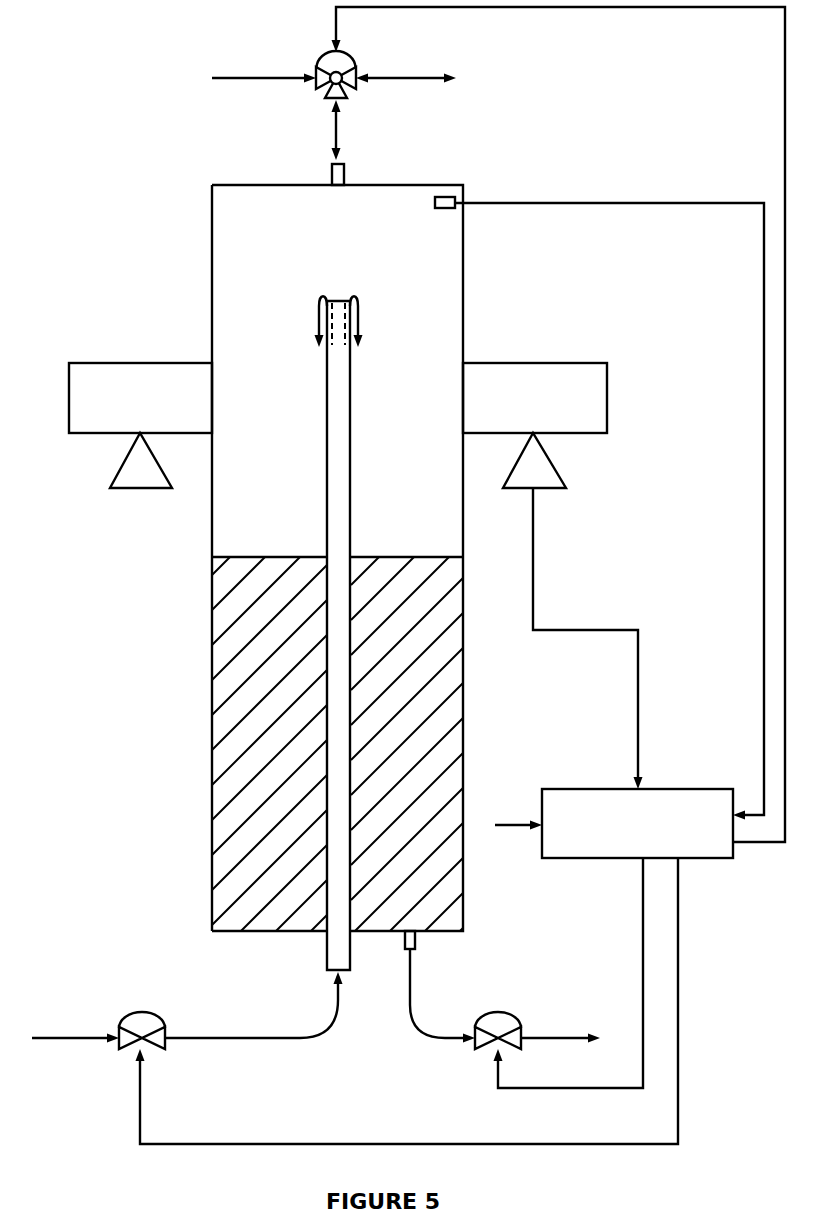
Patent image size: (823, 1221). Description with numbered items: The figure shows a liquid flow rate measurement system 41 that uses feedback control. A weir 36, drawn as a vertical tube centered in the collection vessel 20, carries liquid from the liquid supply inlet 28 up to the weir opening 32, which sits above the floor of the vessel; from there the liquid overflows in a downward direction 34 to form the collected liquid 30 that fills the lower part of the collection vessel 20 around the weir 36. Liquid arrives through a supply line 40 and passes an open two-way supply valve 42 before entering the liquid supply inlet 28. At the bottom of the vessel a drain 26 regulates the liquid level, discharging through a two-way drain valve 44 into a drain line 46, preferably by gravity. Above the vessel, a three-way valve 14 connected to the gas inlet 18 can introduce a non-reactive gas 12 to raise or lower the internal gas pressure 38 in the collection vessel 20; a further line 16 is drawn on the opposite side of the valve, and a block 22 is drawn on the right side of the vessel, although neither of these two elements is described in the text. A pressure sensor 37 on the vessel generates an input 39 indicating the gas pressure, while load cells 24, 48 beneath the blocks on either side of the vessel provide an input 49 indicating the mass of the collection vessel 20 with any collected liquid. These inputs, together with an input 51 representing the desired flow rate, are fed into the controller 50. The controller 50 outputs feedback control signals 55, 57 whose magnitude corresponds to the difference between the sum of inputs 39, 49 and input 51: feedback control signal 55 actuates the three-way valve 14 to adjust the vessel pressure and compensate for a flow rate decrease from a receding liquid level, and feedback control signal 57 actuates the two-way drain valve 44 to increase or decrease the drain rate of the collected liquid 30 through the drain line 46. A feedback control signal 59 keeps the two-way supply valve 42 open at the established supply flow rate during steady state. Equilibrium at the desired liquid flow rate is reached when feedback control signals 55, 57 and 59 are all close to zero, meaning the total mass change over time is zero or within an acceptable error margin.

The non-reactive gas 12 is at (232, 77).
The three-way valve 14 is at (318, 64).
The second gas line 16 is at (432, 77).
The gas inlet 18 is at (332, 173).
The collection vessel 20 is at (463, 290).
The heating block 22 is at (588, 362).
The load cell 24 is at (560, 468).
The drain 26 is at (416, 949).
The liquid supply inlet 28 is at (327, 968).
The collected liquid 30 is at (212, 810).
The weir opening 32 is at (338, 300).
The downward direction 34 is at (330, 334).
The weir 36 is at (351, 453).
The pressure sensor 37 is at (455, 200).
The internal gas pressure 38 is at (223, 278).
The input 39 is at (765, 742).
The supply line 40 is at (77, 1040).
The liquid flow rate measurement system 41 is at (110, 155).
The two-way supply valve 42 is at (132, 1013).
The two-way drain valve 44 is at (500, 1013).
The drain line 46 is at (540, 1037).
The load cell 48 is at (112, 485).
The input 49 is at (637, 718).
The controller 50 is at (595, 788).
The input 51 is at (528, 822).
The feedback control signal 55 is at (768, 843).
The feedback control signal 57 is at (643, 980).
The feedback control signal 59 is at (678, 975).